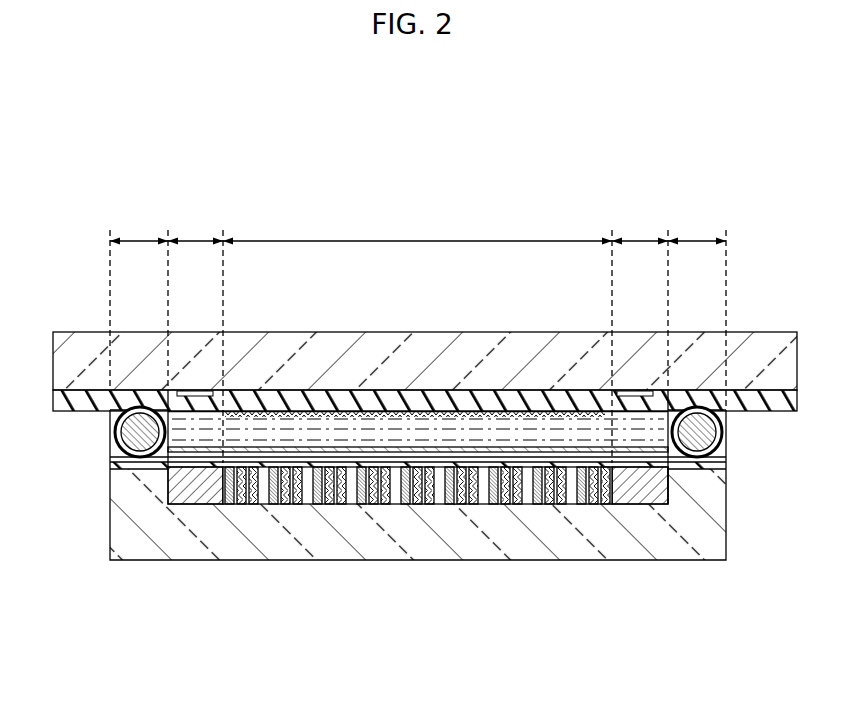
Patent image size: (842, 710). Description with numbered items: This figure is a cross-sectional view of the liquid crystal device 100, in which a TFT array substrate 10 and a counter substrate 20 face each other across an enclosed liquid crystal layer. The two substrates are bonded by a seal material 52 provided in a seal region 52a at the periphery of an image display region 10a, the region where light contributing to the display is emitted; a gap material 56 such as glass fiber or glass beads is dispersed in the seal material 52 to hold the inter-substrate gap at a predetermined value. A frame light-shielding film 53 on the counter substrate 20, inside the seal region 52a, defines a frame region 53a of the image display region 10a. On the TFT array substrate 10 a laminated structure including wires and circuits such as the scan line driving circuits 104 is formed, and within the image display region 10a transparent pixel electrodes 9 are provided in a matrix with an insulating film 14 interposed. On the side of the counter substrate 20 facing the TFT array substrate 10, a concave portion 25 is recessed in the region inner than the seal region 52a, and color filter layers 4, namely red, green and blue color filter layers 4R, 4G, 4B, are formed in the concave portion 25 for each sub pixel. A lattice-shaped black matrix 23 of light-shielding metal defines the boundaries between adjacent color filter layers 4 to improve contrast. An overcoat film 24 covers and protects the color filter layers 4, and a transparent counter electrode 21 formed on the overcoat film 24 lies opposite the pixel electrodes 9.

The liquid crystal device 100 is at (124, 152).
The seal region 52a is at (418, 310).
The frame region 53a is at (418, 338).
The image display region 10a is at (417, 229).
The scan line driving circuit 104 is at (184, 391).
The pixel electrode 9 is at (265, 411).
The TFT array substrate 10 is at (762, 347).
The insulating film 14 is at (793, 411).
The seal material 52 is at (113, 417).
The gap material 56 is at (130, 441).
The counter electrode 21 is at (110, 459).
The overcoat film 24 is at (110, 471).
The concave portion 25 is at (678, 494).
The counter substrate 20 is at (712, 547).
The frame light-shielding film 53 is at (198, 505).
The red color filter layer 4R is at (316, 505).
The green color filter layer 4G is at (329, 505).
The blue color filter layer 4B is at (342, 505).
The black matrix 23 is at (417, 564).
The color filter layer 4 is at (417, 564).